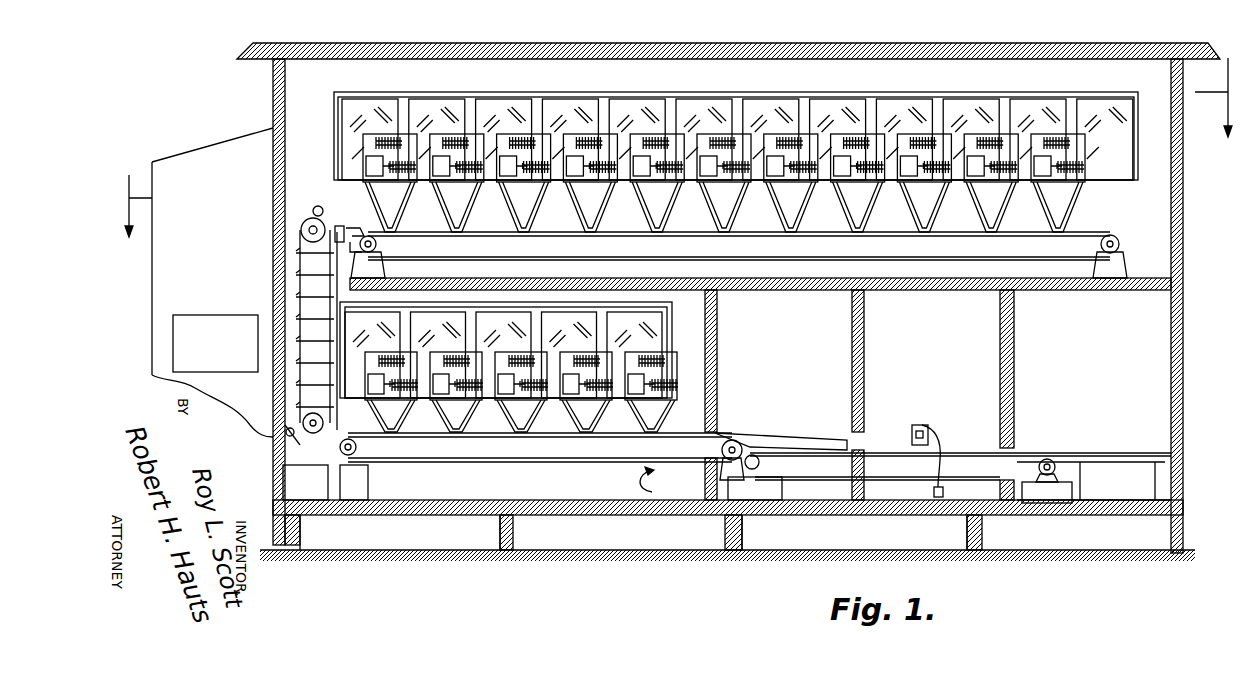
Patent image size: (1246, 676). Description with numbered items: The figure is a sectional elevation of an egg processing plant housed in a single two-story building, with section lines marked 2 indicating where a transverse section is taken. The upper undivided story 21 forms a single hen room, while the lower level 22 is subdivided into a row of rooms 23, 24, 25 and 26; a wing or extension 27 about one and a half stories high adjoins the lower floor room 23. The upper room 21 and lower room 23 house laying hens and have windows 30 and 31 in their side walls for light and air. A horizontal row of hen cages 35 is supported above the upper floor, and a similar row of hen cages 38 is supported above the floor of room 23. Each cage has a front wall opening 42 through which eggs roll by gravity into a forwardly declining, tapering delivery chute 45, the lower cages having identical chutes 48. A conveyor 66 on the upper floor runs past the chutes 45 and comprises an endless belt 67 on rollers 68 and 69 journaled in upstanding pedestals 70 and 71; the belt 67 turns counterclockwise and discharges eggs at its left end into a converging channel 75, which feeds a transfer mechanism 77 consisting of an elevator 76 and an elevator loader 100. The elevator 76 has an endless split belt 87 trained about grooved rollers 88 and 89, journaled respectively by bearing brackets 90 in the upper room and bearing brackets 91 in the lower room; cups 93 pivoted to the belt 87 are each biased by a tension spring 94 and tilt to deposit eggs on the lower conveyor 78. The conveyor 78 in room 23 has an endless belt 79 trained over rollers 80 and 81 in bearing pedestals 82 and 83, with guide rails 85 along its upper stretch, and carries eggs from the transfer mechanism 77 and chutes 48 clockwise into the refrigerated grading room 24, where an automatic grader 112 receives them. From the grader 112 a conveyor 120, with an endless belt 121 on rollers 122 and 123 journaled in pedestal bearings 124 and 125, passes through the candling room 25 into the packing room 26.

The section line 2 is at (669, 147).
The upper undivided story 21 is at (1245, 193).
The lower level 22 is at (1140, 418).
The lower floor room 23 is at (502, 489).
The egg grading room 24 is at (812, 414).
The candling room 25 is at (967, 406).
The packing room 26 is at (1097, 426).
The wing or extension 27 is at (160, 300).
The windows 30 is at (1050, 118).
The windows 31 is at (620, 336).
The hen cages 35 is at (838, 138).
The hen cages 38 is at (660, 389).
The front wall opening 42 is at (1046, 206).
The delivery chute 45 is at (752, 207).
The delivery chutes 48 is at (658, 414).
The conveyor 66 is at (1121, 244).
The endless belt 67 is at (948, 259).
The roller 68 is at (1114, 241).
The roller 69 is at (378, 246).
The pedestal 70 is at (1116, 267).
The pedestal 71 is at (380, 264).
The converging channel 75 is at (357, 229).
The elevator 76 is at (340, 303).
The transfer mechanism 77 is at (318, 203).
The conveyor 78 is at (657, 482).
The endless belt 79 is at (399, 468).
The roller 80 is at (352, 466).
The roller 81 is at (772, 418).
The bearing pedestal 82 is at (345, 472).
The bearing pedestal 83 is at (718, 518).
The guide rails 85 is at (612, 447).
The split belt 87 is at (298, 327).
The roller 88 is at (305, 222).
The roller 89 is at (300, 456).
The bearing brackets 90 is at (304, 229).
The bearing brackets 91 is at (305, 482).
The cups 93 is at (282, 434).
The tension spring 94 is at (256, 372).
The elevator loader 100 is at (340, 220).
The automatic grader 112 is at (813, 432).
The conveyor 120 is at (962, 446).
The endless belt 121 is at (878, 489).
The roller 122 is at (762, 467).
The roller 123 is at (1056, 463).
The pedestal bearing 124 is at (783, 489).
The pedestal bearing 125 is at (1047, 492).